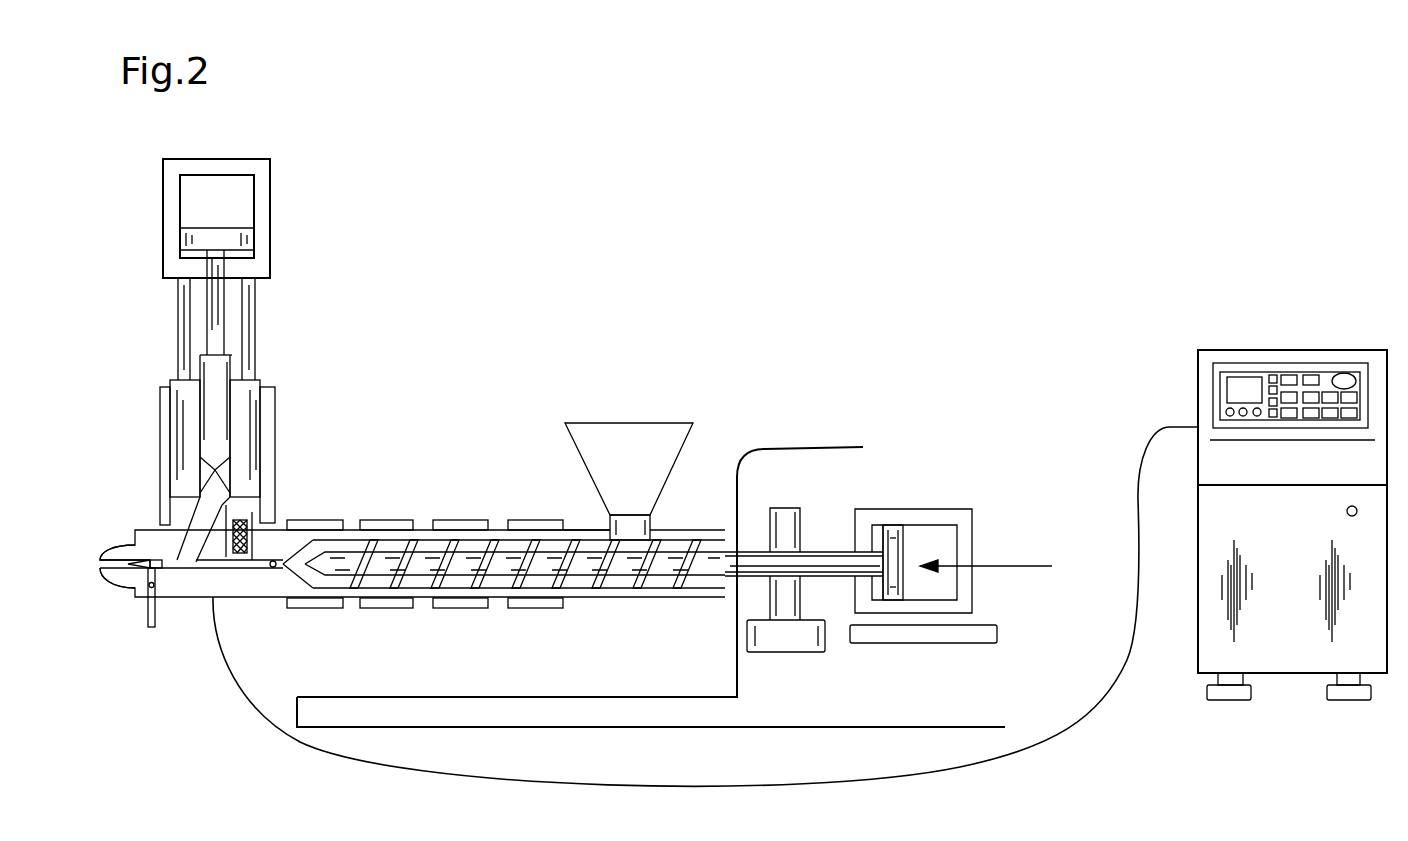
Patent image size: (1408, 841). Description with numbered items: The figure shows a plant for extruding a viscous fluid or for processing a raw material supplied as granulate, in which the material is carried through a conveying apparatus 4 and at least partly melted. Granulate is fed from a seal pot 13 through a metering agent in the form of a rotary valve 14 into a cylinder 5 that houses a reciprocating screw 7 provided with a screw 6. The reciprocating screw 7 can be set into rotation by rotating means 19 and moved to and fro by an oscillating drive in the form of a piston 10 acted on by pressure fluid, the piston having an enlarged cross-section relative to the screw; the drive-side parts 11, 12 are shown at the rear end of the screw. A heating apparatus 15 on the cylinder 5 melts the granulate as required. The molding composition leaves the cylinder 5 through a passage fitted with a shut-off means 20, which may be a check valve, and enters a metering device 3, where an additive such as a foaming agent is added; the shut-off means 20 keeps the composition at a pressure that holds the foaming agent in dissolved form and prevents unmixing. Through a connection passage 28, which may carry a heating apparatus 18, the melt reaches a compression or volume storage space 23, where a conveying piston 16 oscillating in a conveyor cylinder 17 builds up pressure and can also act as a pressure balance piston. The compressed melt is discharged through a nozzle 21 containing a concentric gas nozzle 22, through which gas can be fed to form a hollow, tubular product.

The metering device 3 is at (238, 553).
The conveying apparatus 4 is at (481, 675).
The cylinder 5 is at (497, 540).
The screw 6 is at (372, 540).
The reciprocating screw 7 is at (388, 560).
The piston 10 is at (888, 593).
The coupling 11 is at (885, 542).
The screw drive motor 12 is at (907, 532).
The seal pot 13 is at (672, 432).
The rotary valve 14 is at (652, 518).
The heating apparatus 15 is at (450, 522).
The conveying piston 16 is at (220, 452).
The conveyor cylinder 17 is at (250, 410).
The heating apparatus 18 is at (170, 449).
The rotating means 19 is at (777, 513).
The shut-off means 20 is at (275, 570).
The nozzle 21 is at (121, 601).
The gas nozzle 22 is at (152, 627).
The volume storage space 23 is at (207, 475).
The connection passage 28 is at (222, 512).